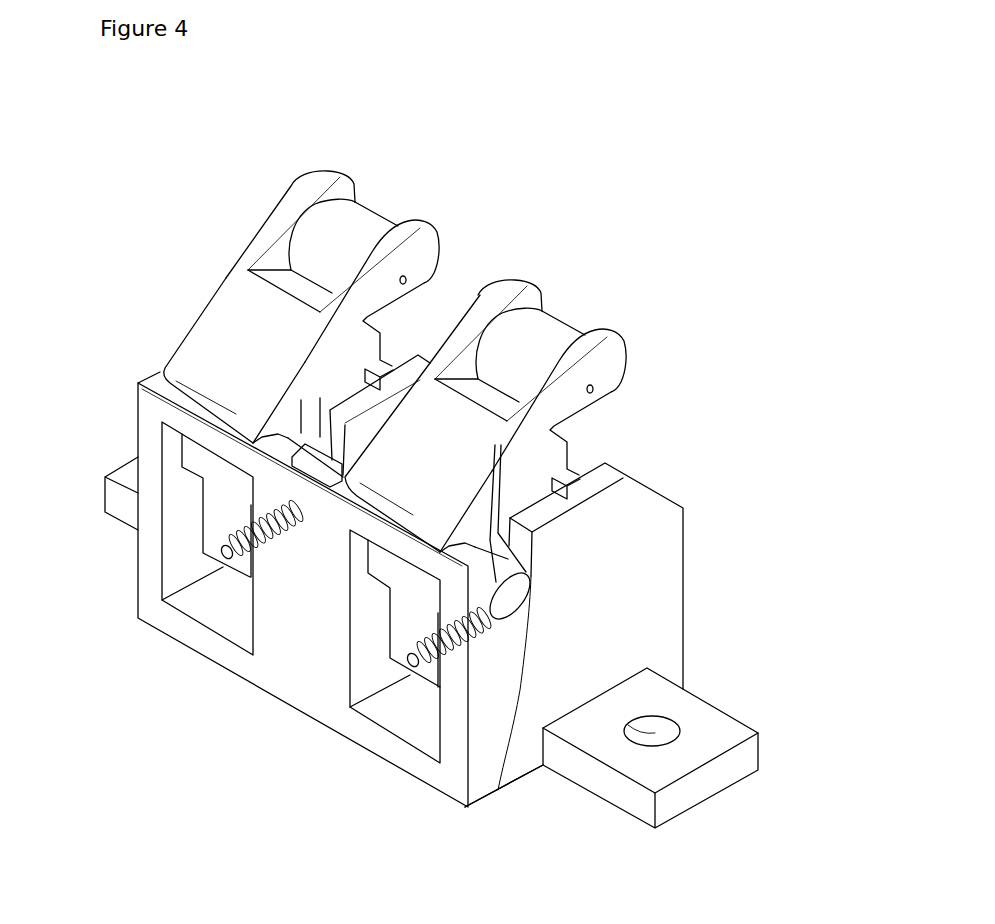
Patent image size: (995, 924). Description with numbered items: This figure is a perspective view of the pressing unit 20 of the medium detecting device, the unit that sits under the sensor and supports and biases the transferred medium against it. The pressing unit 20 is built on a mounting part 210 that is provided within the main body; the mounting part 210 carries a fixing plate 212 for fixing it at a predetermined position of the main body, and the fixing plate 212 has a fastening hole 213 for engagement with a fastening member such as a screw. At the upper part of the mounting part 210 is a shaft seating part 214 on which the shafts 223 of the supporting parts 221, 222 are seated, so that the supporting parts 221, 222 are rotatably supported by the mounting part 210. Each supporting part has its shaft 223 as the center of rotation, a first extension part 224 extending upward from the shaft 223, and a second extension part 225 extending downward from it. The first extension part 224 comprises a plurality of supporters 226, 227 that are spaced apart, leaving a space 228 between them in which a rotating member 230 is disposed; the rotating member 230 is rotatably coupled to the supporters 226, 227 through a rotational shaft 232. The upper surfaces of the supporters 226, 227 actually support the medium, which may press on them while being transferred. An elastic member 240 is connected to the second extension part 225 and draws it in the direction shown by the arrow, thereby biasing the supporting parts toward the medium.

The pressing unit 20 is at (102, 390).
The mounting part 210 is at (665, 633).
The fixing plate 212 is at (700, 798).
The fastening hole 213 is at (632, 733).
The shaft seating part 214 is at (508, 768).
The supporting part 221 is at (318, 160).
The supporting part 222 is at (520, 262).
The shaft 223 is at (516, 593).
The first extension part 224 is at (214, 313).
The second extension part 225 is at (224, 560).
The supporter 226 is at (268, 235).
The supporter 227 is at (432, 242).
The space 228 is at (378, 200).
The rotating member 230 is at (389, 175).
The rotational shaft 232 is at (597, 393).
The elastic member 240 is at (457, 640).